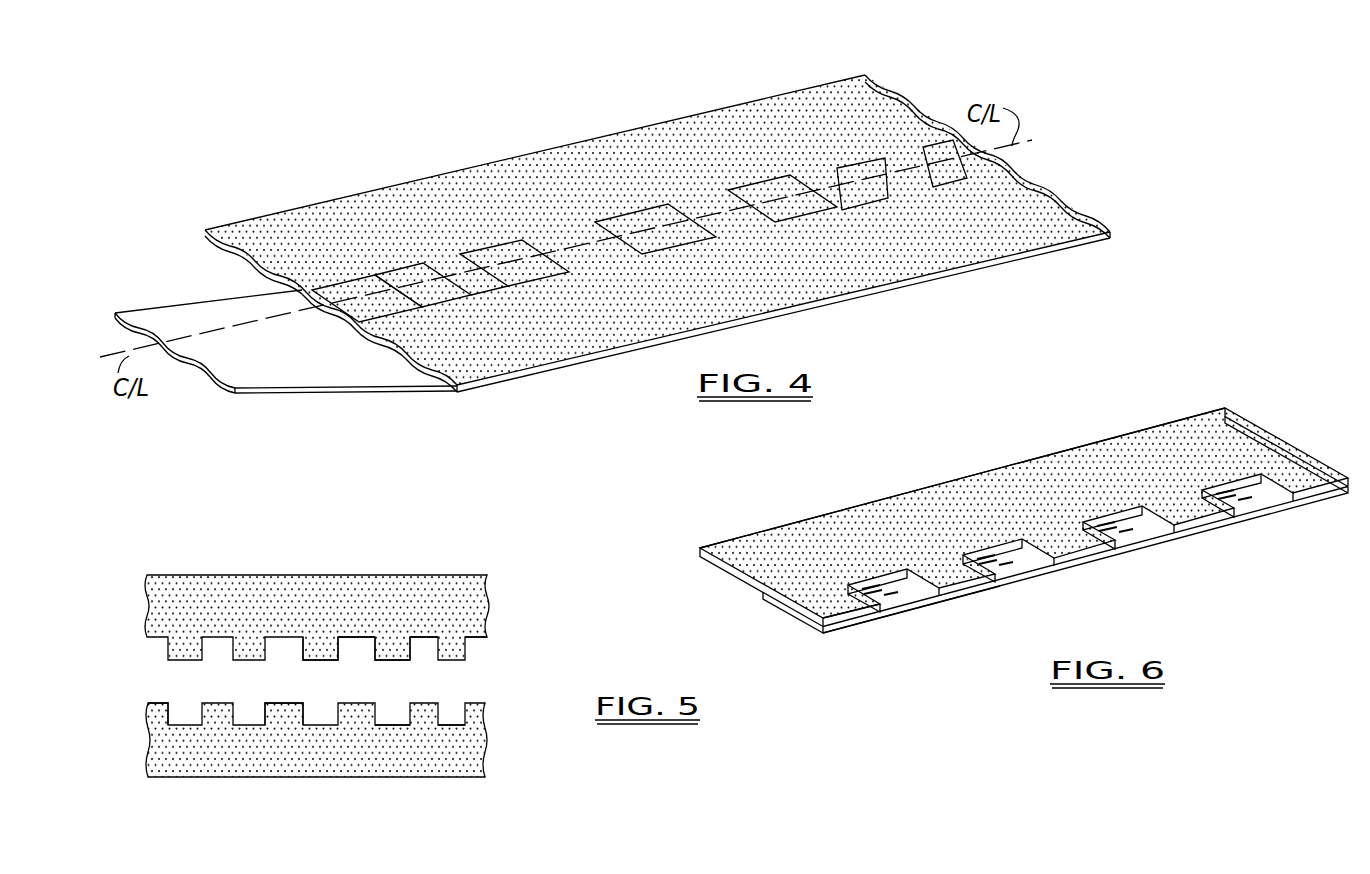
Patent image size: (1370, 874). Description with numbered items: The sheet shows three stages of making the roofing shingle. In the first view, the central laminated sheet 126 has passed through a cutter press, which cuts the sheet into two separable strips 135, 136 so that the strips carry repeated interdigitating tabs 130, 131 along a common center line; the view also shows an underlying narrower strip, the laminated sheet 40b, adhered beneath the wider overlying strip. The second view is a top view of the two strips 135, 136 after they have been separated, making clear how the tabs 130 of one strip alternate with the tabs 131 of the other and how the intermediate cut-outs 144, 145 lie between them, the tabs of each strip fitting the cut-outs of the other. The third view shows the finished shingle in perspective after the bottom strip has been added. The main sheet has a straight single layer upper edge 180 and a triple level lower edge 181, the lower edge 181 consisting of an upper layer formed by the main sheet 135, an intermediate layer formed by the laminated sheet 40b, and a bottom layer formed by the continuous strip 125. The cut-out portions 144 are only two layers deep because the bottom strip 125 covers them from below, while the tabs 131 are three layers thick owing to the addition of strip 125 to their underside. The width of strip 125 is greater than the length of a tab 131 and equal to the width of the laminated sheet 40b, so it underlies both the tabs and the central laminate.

In FIG. 4, the central laminated sheet 126 is at (525, 163).
In FIG. 4, the laminated sheet 40b is at (192, 306).
In FIG. 6, the laminated sheet 40b is at (763, 600).
In FIG. 4, the tabs 130 is at (489, 284).
In FIG. 5, the tabs 130 is at (270, 715).
In FIG. 4, the tabs 131 is at (604, 222).
In FIG. 5, the tabs 131 is at (387, 648).
In FIG. 6, the tabs 131 is at (967, 583).
In FIG. 5, the strip 135 is at (478, 605).
In FIG. 6, the strip 135 is at (715, 562).
In FIG. 5, the strip 136 is at (480, 752).
In FIG. 5, the cut-out portions 144 is at (420, 649).
In FIG. 6, the cut-out portions 144 is at (1248, 503).
In FIG. 5, the cut-outs 145 is at (388, 712).
In FIG. 6, the upper edge 180 is at (763, 530).
In FIG. 6, the lower edge 181 is at (863, 620).
In FIG. 6, the continuous strip 125 is at (807, 627).